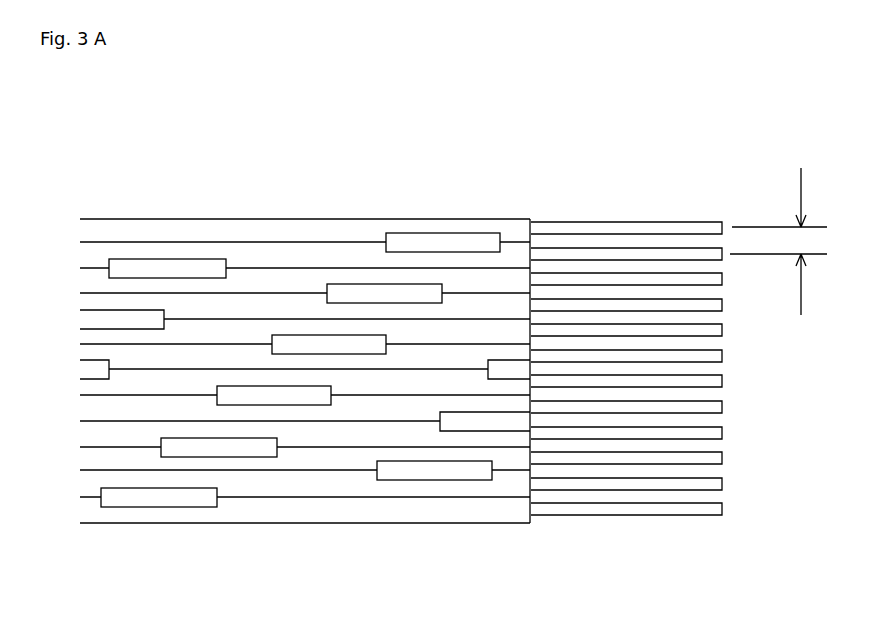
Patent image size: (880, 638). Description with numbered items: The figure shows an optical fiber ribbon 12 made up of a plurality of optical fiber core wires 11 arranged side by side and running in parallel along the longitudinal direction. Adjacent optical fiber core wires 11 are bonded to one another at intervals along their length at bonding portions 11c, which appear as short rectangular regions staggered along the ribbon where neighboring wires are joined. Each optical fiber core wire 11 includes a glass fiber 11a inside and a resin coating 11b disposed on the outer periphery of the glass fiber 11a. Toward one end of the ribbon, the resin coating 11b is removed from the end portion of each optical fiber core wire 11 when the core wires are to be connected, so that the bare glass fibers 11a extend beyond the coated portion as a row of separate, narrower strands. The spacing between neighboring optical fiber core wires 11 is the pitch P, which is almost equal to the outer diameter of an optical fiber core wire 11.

The optical fiber core wire 11 is at (329, 229).
The glass fiber 11a is at (640, 512).
The resin coating 11b is at (330, 515).
The bonding portion 11c is at (406, 233).
The optical fiber ribbon 12 is at (633, 185).
The pitch P is at (778, 241).